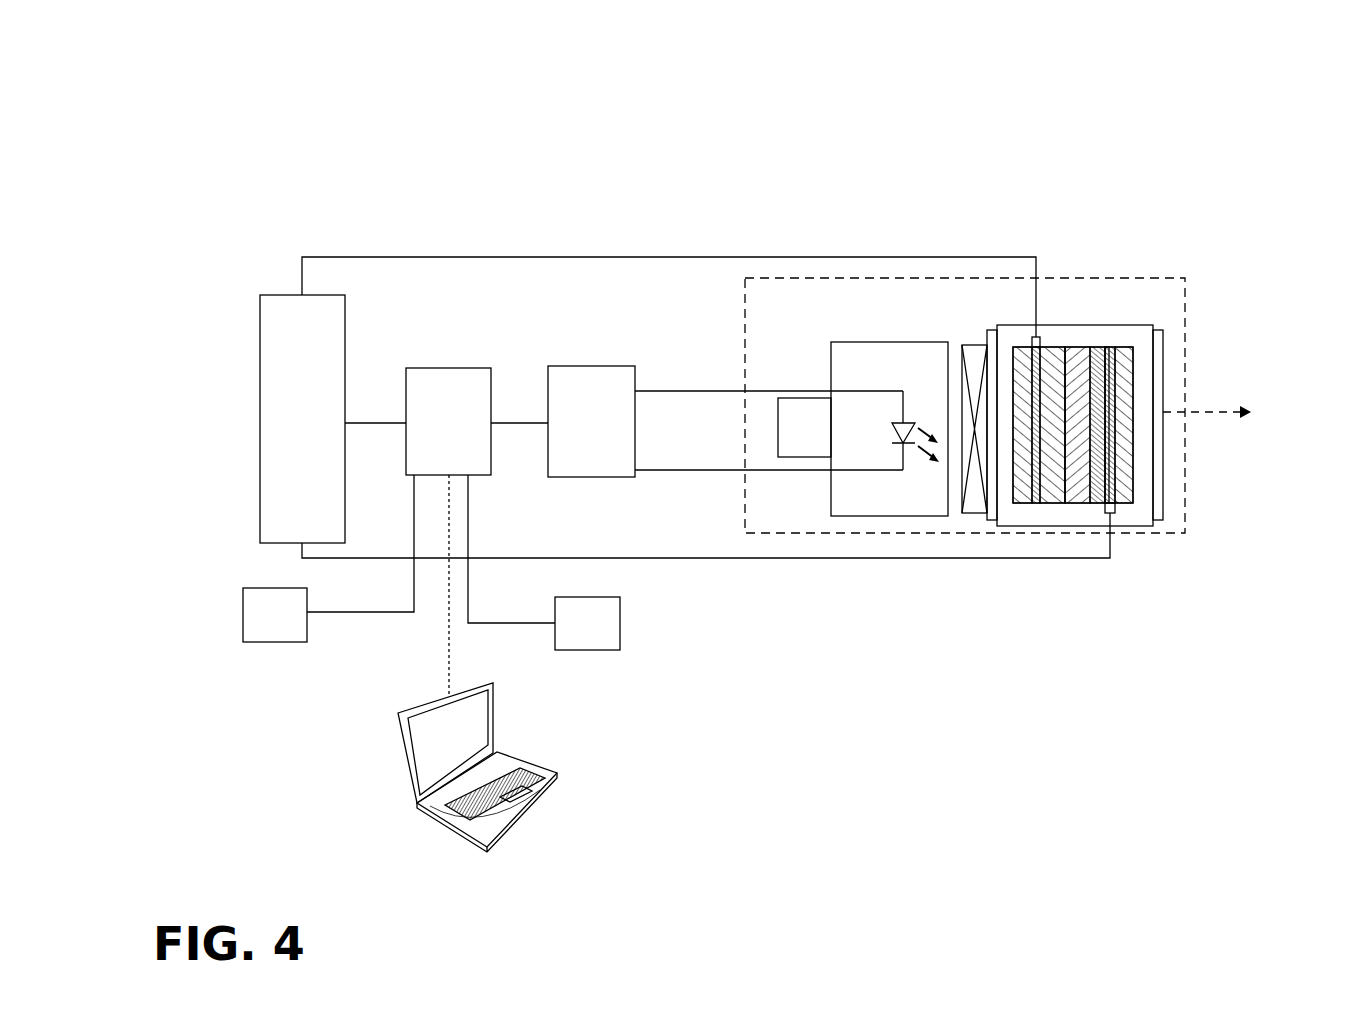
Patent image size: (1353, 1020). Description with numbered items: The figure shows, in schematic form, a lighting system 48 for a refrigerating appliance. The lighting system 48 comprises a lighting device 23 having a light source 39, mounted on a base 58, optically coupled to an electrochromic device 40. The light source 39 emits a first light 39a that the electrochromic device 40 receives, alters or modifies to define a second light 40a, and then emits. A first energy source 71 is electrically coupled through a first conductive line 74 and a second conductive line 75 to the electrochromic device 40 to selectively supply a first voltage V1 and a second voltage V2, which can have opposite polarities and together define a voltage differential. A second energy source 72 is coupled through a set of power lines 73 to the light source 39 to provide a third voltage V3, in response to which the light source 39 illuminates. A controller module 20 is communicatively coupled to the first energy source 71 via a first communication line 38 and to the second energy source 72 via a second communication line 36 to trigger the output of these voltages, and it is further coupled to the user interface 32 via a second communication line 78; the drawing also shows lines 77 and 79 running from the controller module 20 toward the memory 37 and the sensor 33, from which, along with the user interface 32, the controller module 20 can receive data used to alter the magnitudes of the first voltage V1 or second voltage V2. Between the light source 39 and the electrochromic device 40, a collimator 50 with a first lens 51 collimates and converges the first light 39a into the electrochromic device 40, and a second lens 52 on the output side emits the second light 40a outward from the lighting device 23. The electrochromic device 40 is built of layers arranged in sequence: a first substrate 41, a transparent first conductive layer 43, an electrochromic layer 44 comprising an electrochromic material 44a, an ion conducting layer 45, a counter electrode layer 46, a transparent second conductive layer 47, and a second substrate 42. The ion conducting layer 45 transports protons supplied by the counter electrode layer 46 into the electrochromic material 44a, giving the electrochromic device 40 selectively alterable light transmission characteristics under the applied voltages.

The lighting system 48 is at (490, 133).
The first energy source 71 is at (302, 419).
The controller module 20 is at (448, 421).
The second energy source 72 is at (591, 421).
The first communication line 38 is at (378, 423).
The second communication line 36 is at (507, 423).
The first conductive line 74 is at (656, 257).
The second conductive line 75 is at (797, 558).
The set of power lines 73 is at (703, 391).
The lighting device 23 is at (746, 338).
The first voltage V1 is at (841, 257).
The second voltage V2 is at (845, 561).
The third voltage V3 is at (811, 391).
The light source 39 is at (898, 370).
The first light 39a is at (929, 470).
The base 58 is at (800, 437).
The electrochromic device 40 is at (997, 326).
The second light 40a is at (1207, 418).
The collimator 50 is at (973, 515).
The first lens 51 is at (992, 520).
The second lens 52 is at (1163, 493).
The first substrate 41 is at (1022, 503).
The second substrate 42 is at (1123, 503).
The first conductive layer 43 is at (1030, 503).
The electrochromic layer 44 is at (1050, 503).
The electrochromic material 44a is at (1050, 358).
The ion conducting layer 45 is at (1077, 347).
The counter electrode layer 46 is at (1097, 347).
The second conductive layer 47 is at (1108, 347).
The connection to memory 77 is at (413, 578).
The second communication line 78 is at (448, 625).
The connection to display 79 is at (468, 579).
The memory 37 is at (275, 615).
The sensor 33 is at (587, 623).
The user interface 32 is at (513, 758).